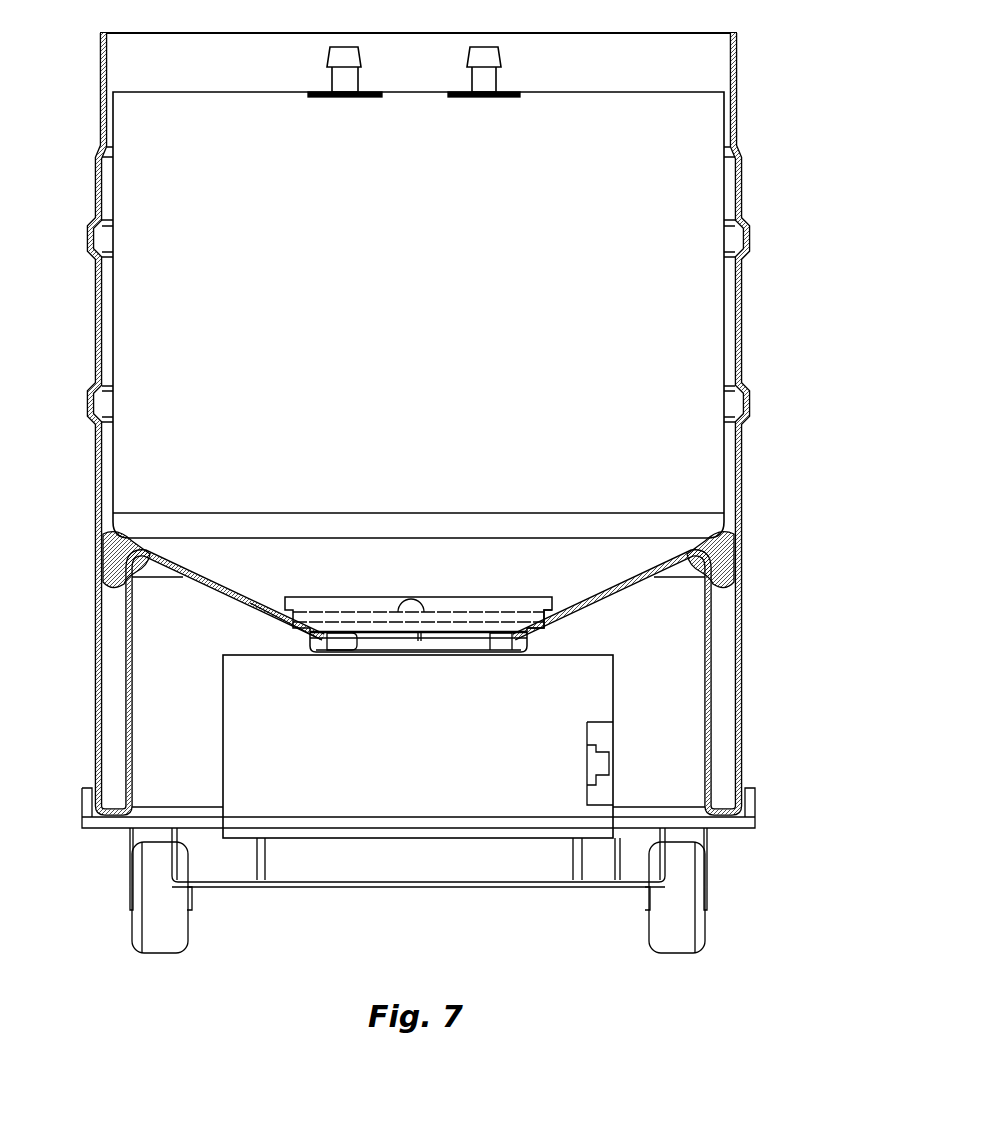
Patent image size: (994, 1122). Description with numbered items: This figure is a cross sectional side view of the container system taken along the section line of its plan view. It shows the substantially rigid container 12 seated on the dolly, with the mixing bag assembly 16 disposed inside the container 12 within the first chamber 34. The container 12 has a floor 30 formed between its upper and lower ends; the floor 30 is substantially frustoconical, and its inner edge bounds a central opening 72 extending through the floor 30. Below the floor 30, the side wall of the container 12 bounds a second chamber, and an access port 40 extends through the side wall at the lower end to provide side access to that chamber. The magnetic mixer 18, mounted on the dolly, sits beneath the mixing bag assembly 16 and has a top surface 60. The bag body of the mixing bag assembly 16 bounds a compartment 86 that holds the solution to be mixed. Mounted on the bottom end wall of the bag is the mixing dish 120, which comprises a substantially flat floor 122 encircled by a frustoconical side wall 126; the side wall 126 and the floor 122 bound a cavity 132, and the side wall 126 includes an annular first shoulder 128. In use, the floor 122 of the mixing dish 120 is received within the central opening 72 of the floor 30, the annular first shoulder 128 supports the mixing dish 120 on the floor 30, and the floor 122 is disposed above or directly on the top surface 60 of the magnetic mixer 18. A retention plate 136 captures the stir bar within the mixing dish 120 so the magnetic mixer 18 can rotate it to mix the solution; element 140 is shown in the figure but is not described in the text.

The container 12 is at (735, 143).
The mixing bag assembly 16 is at (705, 282).
The magnetic mixer 18 is at (455, 825).
The floor 30 is at (183, 578).
The first chamber 34 is at (690, 75).
The access port 40 is at (725, 720).
The top surface 60 is at (607, 655).
The central opening 72 is at (317, 633).
The compartment 86 is at (140, 270).
The mixing dish 120 is at (515, 648).
The floor 122 is at (475, 656).
The side wall 126 is at (260, 610).
The annular first shoulder 128 is at (553, 628).
The cavity 132 is at (338, 642).
The retention plate 136 is at (475, 613).
The pin 140 is at (410, 642).